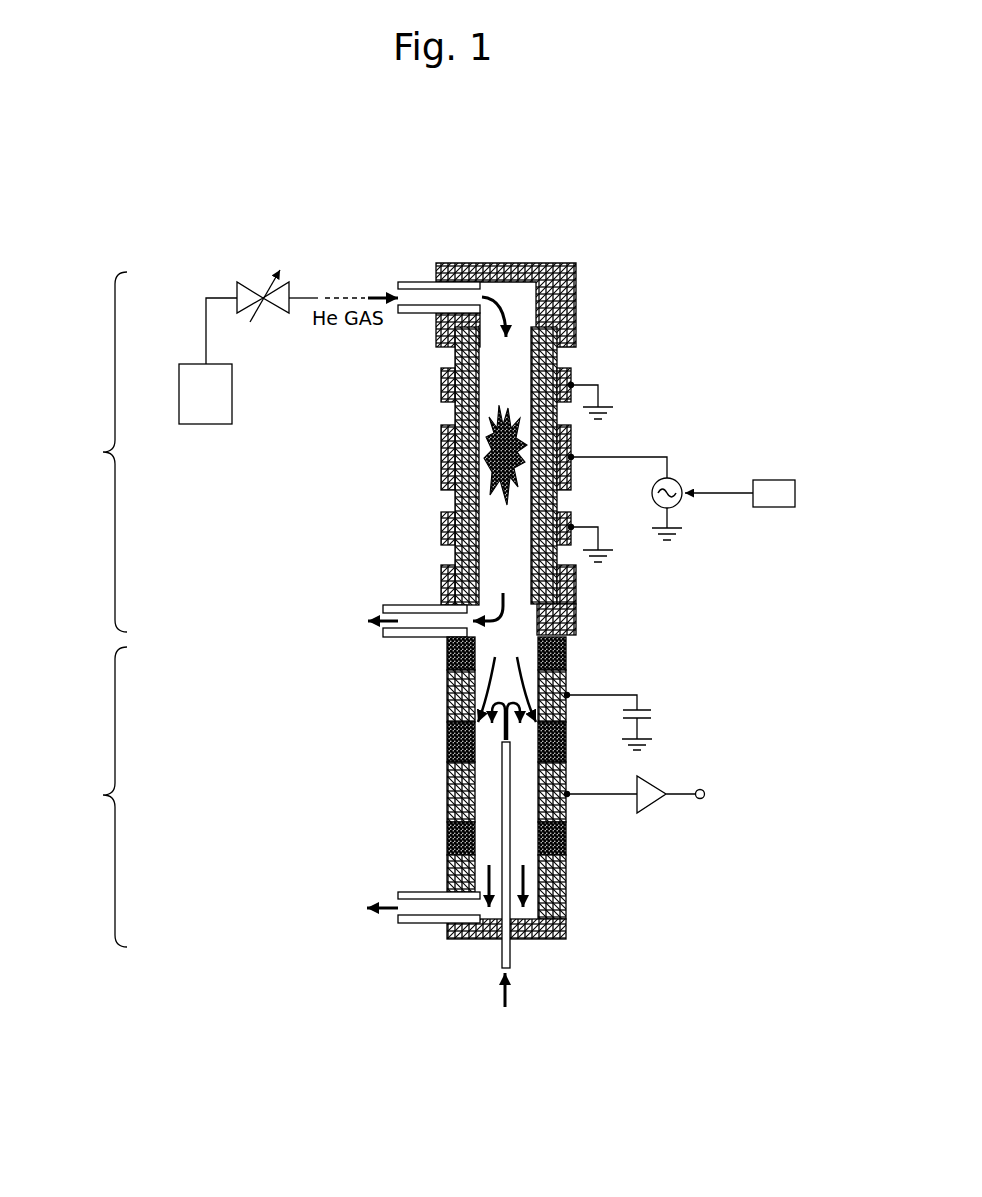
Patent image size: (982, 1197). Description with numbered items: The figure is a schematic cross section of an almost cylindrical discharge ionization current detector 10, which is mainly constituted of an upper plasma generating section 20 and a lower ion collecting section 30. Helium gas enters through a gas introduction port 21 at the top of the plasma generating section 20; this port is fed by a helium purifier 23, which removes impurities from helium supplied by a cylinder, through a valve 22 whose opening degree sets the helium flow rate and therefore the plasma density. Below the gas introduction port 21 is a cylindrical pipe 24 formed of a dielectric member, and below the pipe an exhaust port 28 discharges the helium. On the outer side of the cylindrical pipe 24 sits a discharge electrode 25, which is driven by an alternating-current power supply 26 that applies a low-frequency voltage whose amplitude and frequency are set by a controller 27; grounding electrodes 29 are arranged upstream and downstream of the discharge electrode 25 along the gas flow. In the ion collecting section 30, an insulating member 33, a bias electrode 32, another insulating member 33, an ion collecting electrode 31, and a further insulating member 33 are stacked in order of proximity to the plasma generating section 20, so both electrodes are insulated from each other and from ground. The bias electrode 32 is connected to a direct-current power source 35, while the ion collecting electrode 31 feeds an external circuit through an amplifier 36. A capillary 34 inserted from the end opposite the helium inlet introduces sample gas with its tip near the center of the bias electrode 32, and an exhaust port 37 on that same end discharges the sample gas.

The discharge ionization current detector 10 is at (128, 148).
The plasma generating section 20 is at (371, 440).
The gas introduction port 21 is at (397, 283).
The valve 22 is at (260, 278).
The helium purifier 23 is at (180, 364).
The cylindrical pipe 24 is at (555, 350).
The discharge electrode 25 is at (572, 456).
The alternating-current power supply 26 is at (678, 482).
The controller 27 is at (795, 480).
The exhaust port 28 is at (383, 605).
The grounding electrodes 29 is at (569, 379).
The ion collecting section 30 is at (342, 835).
The ion collecting electrode 31 is at (560, 803).
The bias electrode 32 is at (567, 713).
The insulating member 33 is at (567, 753).
The capillary 34 is at (510, 950).
The direct-current power source 35 is at (655, 705).
The amplifier 36 is at (660, 780).
The exhaust port 37 is at (398, 892).